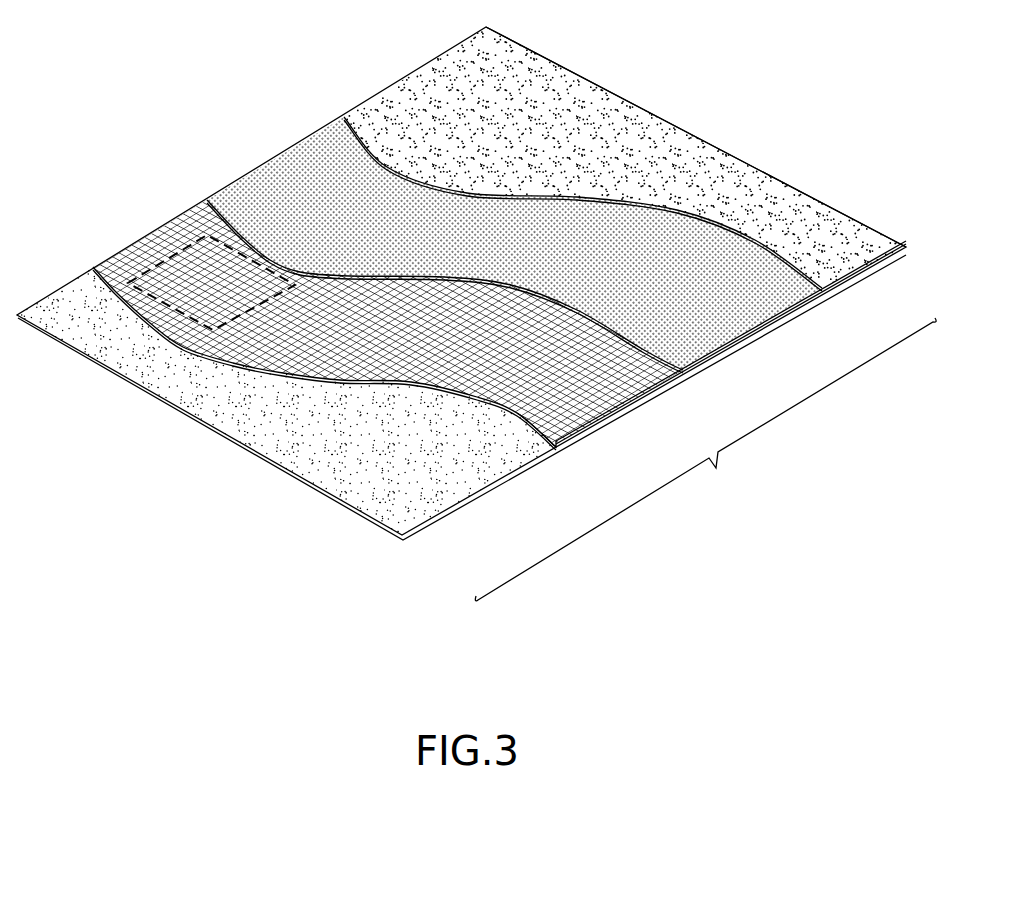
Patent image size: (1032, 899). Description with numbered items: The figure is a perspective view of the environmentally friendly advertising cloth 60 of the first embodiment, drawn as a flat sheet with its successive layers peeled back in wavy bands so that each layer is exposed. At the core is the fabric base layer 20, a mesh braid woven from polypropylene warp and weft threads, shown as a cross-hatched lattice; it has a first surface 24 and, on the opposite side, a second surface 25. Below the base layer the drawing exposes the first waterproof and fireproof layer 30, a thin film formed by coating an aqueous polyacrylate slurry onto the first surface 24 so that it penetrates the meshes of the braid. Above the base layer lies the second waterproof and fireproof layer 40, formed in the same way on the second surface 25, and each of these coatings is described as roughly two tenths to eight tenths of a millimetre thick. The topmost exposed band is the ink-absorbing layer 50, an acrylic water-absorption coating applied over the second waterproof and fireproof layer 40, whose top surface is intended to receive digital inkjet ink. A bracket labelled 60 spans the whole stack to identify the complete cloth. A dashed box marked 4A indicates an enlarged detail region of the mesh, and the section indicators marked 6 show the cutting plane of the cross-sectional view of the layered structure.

The fabric base layer 20 is at (620, 417).
The first surface 24 is at (521, 413).
The second surface 25 is at (644, 377).
The first waterproof and fireproof layer 30 is at (461, 472).
The second waterproof and fireproof layer 40 is at (735, 307).
The ink-absorbing layer 50 is at (845, 238).
The environmentally friendly advertising cloth 60 is at (705, 459).
The detail region of FIG. 4A is at (178, 250).
The section line of FIG. 6 is at (744, 61).